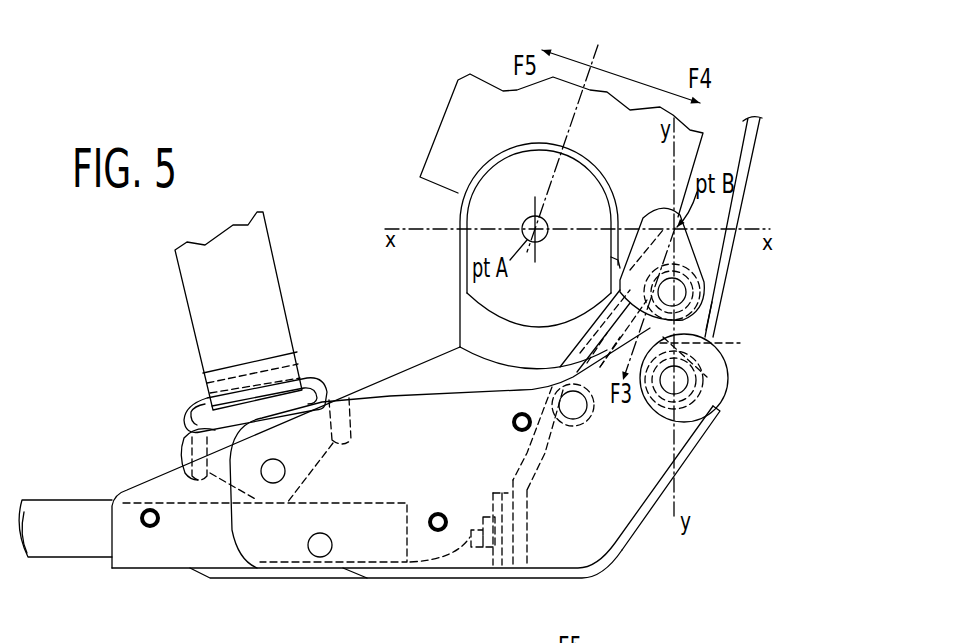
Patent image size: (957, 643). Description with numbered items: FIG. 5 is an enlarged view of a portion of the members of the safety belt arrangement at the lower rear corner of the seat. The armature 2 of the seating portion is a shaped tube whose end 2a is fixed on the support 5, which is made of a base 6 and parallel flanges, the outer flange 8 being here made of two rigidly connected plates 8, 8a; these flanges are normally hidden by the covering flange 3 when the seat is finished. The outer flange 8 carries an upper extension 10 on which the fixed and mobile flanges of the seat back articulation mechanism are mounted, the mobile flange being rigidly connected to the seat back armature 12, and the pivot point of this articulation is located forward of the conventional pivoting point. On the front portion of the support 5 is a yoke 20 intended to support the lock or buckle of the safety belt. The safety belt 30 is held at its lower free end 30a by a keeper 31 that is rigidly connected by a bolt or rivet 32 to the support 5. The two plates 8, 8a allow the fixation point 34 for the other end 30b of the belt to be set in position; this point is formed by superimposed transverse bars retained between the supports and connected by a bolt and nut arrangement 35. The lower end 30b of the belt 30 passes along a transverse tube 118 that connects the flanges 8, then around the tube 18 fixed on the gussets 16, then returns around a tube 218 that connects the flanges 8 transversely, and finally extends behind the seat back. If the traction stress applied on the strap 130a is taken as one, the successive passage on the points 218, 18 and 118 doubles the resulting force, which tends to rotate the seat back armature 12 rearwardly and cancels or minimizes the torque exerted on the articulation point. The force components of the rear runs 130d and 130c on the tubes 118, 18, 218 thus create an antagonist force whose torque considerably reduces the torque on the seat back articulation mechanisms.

The armature 2 is at (55, 518).
The end of the tube 2a is at (360, 537).
The covering flange 3 is at (613, 515).
The support 5 is at (693, 462).
The base 6 is at (432, 580).
The outer flange 8 is at (433, 370).
The plate 8a is at (400, 418).
The upper extension 10 is at (517, 177).
The seat back armature 12 is at (463, 120).
The gusset 16 is at (653, 225).
The tube 18 is at (690, 286).
The yoke 20 is at (320, 385).
The safety belt 30 is at (185, 287).
The lower free end 30a is at (245, 355).
The lower end of the belt 30b is at (547, 433).
The keeper 31 is at (210, 440).
The bolt or rivet 32 is at (267, 483).
The fixation point 34 is at (513, 497).
The bolt and nut arrangement 35 is at (520, 573).
The transverse tube 118 is at (585, 418).
The rear run 130a is at (720, 297).
The ventral run 130c is at (598, 337).
The rear run 130d is at (723, 355).
The tube 218 is at (688, 382).